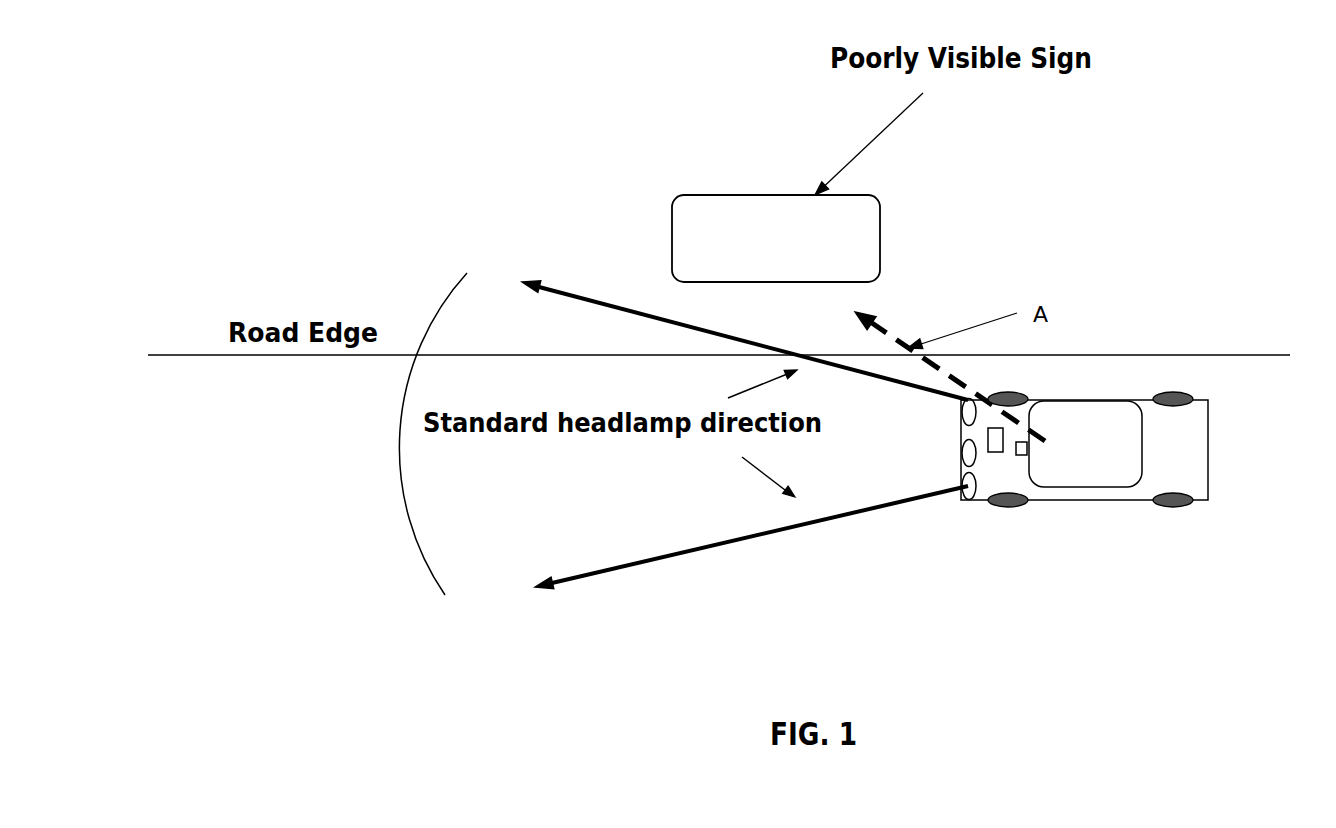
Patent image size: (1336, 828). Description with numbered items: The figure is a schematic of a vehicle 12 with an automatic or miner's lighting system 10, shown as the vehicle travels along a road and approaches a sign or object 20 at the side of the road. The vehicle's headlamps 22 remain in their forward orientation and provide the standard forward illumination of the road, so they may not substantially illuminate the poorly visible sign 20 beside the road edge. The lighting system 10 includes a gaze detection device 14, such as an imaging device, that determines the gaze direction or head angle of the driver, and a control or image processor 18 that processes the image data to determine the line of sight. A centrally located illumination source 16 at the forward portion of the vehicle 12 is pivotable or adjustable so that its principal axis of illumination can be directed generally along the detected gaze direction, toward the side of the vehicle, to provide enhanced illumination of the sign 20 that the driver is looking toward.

The automatic lighting system 10 is at (919, 541).
The vehicle 12 is at (1202, 462).
The gaze detection device 14 is at (1021, 456).
The illumination source 16 is at (963, 453).
The control or image processor 18 is at (996, 448).
The sign or object 20 is at (868, 210).
The headlamp 22 is at (963, 409).